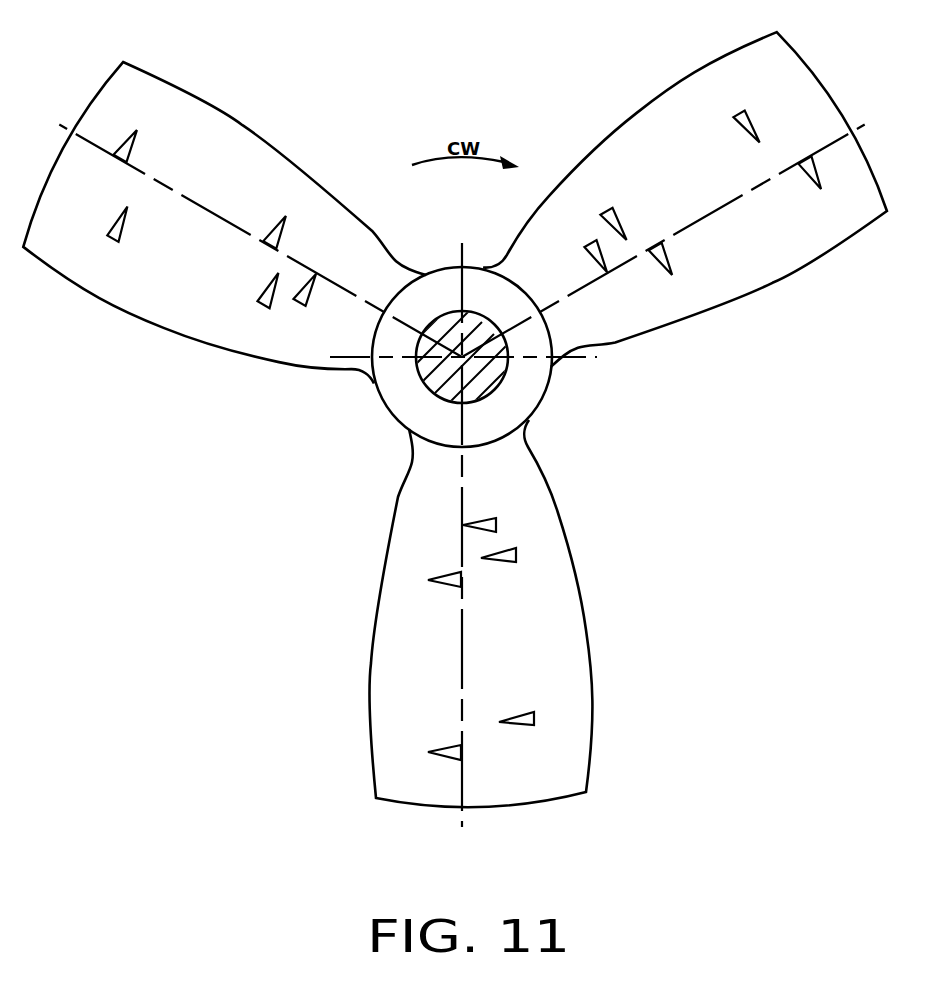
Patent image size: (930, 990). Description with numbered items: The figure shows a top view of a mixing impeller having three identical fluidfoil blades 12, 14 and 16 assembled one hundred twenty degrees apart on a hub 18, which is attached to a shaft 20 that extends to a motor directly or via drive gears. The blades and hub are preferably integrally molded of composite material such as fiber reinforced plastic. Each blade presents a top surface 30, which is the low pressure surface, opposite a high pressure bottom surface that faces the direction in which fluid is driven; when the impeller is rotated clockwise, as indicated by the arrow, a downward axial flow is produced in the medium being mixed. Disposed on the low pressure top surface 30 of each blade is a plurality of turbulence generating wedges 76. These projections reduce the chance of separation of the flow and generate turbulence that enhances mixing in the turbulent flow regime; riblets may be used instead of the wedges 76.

The blade 12 is at (647, 122).
The blade 14 is at (567, 630).
The blade 16 is at (253, 158).
The hub 18 is at (385, 403).
The shaft 20 is at (493, 378).
The top surface 30 is at (705, 292).
The turbulence generating wedges 76 is at (614, 213).